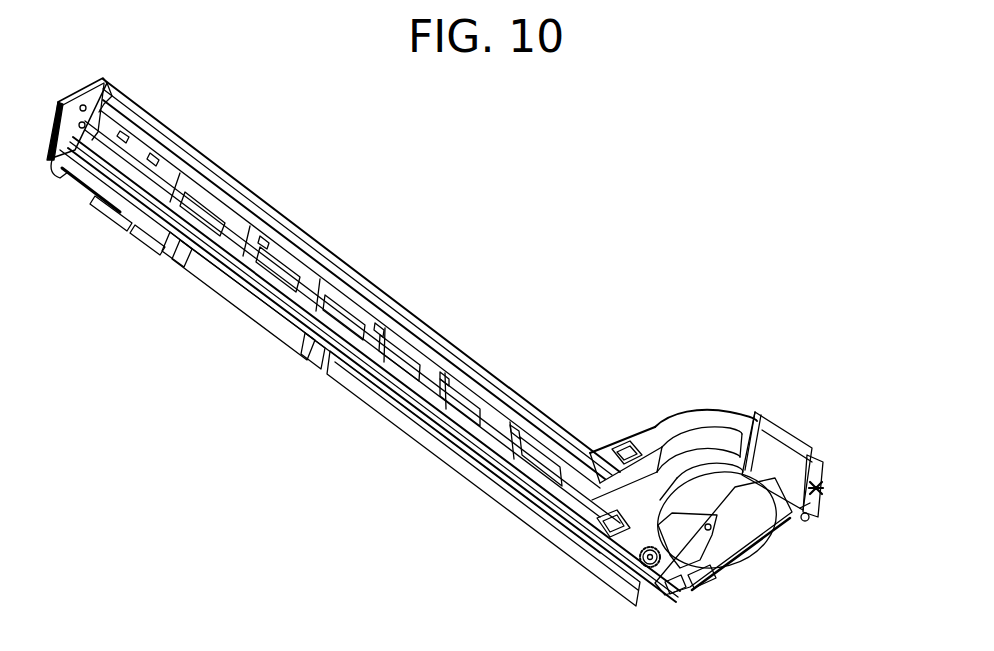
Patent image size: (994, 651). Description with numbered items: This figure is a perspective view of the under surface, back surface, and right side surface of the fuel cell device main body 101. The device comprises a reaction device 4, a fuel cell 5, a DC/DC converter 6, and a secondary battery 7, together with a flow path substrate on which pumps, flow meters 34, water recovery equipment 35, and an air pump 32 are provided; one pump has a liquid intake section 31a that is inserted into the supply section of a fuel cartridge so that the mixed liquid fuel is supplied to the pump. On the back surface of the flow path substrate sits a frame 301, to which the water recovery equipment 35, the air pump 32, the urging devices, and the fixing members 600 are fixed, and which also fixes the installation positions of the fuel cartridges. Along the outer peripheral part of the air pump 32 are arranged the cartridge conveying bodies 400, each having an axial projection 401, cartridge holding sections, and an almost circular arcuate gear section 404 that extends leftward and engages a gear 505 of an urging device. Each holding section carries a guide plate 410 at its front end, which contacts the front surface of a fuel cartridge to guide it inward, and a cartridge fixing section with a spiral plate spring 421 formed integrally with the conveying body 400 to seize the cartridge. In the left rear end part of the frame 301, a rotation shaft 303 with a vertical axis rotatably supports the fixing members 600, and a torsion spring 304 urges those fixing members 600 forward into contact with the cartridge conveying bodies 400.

The fuel cell device main body 101 is at (752, 322).
The liquid intake section 31a is at (99, 135).
The secondary battery 7 is at (83, 190).
The DC/DC converter 6 is at (122, 218).
The flow meter 34 is at (173, 265).
The reaction device 4 is at (275, 332).
The fuel cell 5 is at (522, 508).
The guide plate 410 is at (563, 482).
The plate spring 421 is at (620, 455).
The cartridge conveying body 400 is at (685, 412).
The fixing member 600 is at (767, 450).
The torsion spring 304 is at (825, 487).
The rotation shaft 303 is at (810, 517).
The frame 301 is at (785, 543).
The air pump 32 is at (752, 552).
The axial projection 401 is at (708, 527).
The water recovery equipment 35 is at (703, 557).
The gear section 404 is at (665, 592).
The gear 505 is at (627, 573).